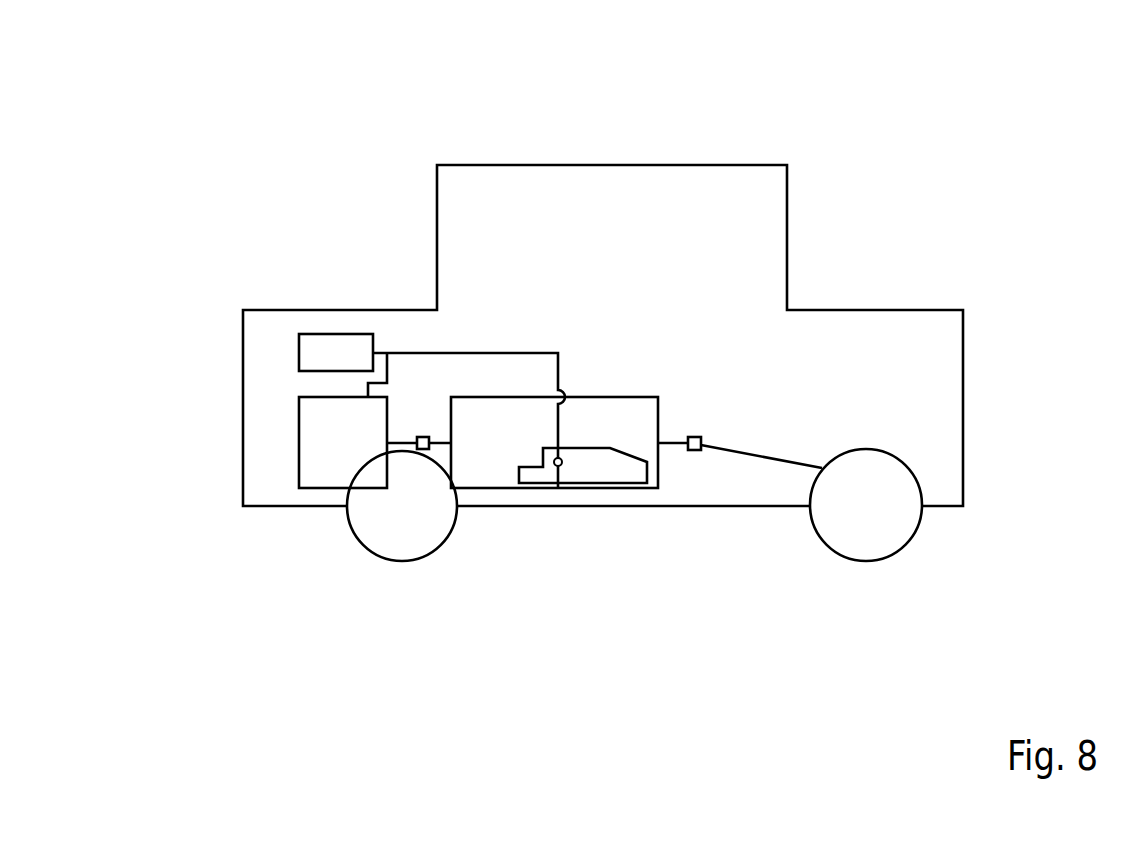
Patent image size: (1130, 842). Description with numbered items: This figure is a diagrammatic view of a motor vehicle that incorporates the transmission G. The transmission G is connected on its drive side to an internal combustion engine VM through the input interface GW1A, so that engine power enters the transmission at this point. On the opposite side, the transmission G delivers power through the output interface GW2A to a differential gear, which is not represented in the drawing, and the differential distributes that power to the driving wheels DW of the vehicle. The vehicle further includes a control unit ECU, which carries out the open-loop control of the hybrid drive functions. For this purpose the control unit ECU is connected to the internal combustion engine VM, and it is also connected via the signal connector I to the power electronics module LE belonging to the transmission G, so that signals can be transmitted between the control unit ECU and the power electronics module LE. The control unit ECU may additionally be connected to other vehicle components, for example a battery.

The control unit ECU is at (206, 334).
The internal combustion engine VM is at (222, 453).
The transmission G is at (554, 539).
The signal connector I is at (553, 569).
The power electronics module LE is at (583, 564).
The input interface GW1A is at (361, 242).
The output interface GW2A is at (668, 243).
The driving wheels DW is at (866, 565).